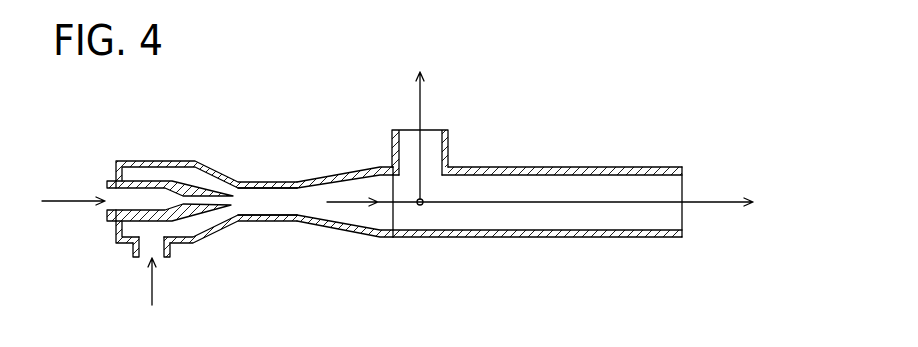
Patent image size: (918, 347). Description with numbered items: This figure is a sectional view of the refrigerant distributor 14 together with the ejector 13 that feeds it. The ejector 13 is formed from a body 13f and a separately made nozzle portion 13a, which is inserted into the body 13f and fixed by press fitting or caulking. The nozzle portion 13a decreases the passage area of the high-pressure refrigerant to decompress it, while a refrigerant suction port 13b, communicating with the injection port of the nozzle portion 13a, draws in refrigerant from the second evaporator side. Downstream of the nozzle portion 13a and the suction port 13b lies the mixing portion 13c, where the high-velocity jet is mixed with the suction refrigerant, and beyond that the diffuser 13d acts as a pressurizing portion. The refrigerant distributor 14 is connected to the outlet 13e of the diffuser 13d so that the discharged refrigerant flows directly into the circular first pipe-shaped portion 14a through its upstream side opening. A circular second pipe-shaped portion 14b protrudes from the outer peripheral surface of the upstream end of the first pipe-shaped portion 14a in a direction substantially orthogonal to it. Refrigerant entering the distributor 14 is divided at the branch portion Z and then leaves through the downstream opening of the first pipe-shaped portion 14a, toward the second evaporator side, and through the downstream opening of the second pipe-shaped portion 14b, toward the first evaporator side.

The ejector 13 is at (292, 174).
The nozzle portion 13a is at (187, 187).
The refrigerant suction port 13b is at (143, 258).
The mixing portion 13c is at (262, 200).
The diffuser 13d is at (353, 210).
The outlet 13e is at (403, 217).
The body 13f is at (348, 175).
The refrigerant distributor 14 is at (584, 154).
The first pipe-shaped portion 14a is at (558, 215).
The second pipe-shaped portion 14b is at (430, 160).
The branch portion Z is at (422, 206).